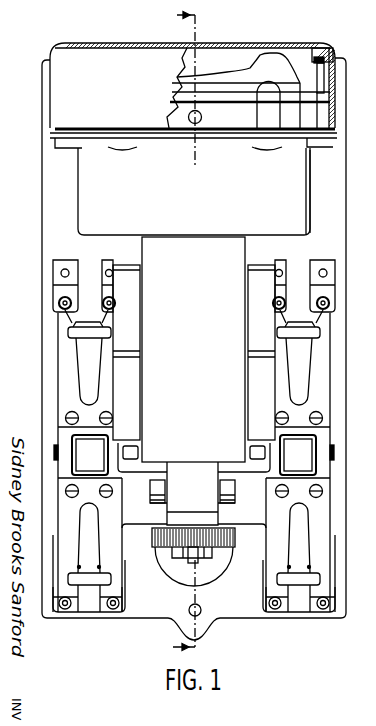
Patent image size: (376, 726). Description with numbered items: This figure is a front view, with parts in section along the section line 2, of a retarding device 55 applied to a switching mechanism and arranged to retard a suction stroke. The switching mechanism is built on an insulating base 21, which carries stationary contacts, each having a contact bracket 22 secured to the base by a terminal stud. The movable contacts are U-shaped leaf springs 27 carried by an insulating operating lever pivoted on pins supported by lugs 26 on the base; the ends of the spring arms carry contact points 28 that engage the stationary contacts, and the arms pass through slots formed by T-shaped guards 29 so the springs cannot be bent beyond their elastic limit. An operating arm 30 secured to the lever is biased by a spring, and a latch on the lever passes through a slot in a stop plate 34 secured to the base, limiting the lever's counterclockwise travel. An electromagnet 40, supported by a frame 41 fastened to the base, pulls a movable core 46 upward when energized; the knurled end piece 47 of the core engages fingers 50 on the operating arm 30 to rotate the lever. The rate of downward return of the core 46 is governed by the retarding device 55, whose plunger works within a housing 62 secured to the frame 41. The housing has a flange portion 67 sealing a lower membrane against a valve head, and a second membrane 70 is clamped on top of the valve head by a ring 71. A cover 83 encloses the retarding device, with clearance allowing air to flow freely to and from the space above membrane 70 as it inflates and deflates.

The section line 2- 2 is at (365, 460).
The insulating base 21 is at (42, 212).
The contact bracket 22 is at (333, 289).
The lugs 26 is at (194, 455).
The leaf spring 27 is at (324, 397).
The contact point 28 is at (324, 307).
The T-shaped guards 29 is at (301, 339).
The operating arm 30 is at (234, 492).
The stop plate 34 is at (218, 577).
The electromagnet 40 is at (128, 275).
The frame 41 is at (249, 253).
The movable core 46 is at (198, 474).
The end piece 47 is at (231, 549).
The fingers 50 is at (164, 503).
The retarding device 55 is at (78, 177).
The housing 62 is at (311, 190).
The flange portion 67 is at (168, 139).
The membrane 70 is at (221, 73).
The ring 71 is at (278, 83).
The cover 83 is at (262, 45).